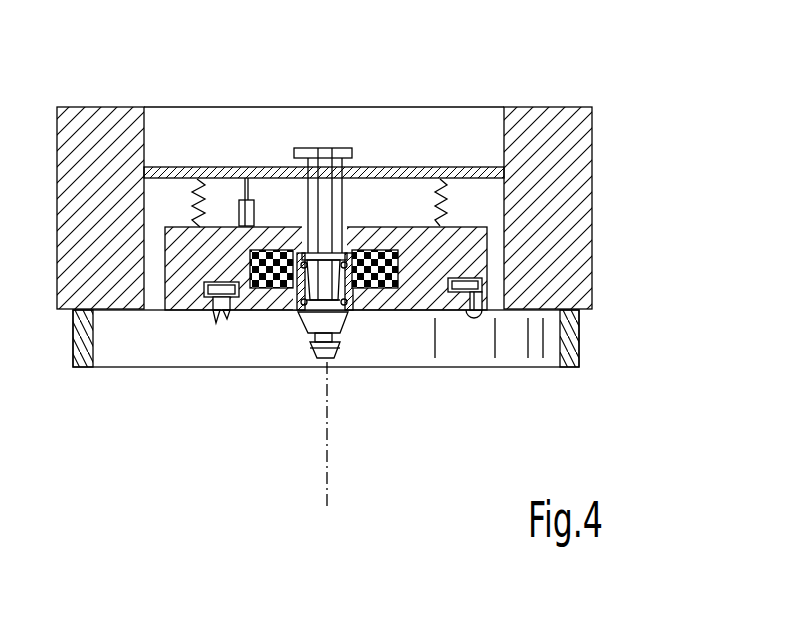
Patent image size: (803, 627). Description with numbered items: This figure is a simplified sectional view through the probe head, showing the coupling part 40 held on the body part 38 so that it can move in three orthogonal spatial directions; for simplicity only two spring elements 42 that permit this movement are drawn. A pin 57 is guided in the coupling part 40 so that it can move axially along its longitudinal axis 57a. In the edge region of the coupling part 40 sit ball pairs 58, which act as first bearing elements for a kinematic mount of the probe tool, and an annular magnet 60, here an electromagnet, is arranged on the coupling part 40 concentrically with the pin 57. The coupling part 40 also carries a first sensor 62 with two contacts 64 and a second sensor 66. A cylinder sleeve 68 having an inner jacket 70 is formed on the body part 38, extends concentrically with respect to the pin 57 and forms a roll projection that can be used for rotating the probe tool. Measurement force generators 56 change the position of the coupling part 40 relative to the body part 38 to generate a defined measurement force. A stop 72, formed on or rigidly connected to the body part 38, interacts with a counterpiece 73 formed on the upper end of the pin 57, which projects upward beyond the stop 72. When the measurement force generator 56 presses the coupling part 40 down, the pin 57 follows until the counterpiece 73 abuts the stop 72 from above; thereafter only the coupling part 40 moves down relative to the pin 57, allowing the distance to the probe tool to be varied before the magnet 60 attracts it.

The body part 38 is at (570, 163).
The coupling part 40 is at (190, 300).
The spring elements 42 is at (192, 200).
The measurement force generator 56 is at (254, 208).
The pin 57 is at (340, 352).
The nozzle axis 57a is at (328, 472).
The ball pairs 58 is at (475, 318).
The magnet 60 is at (287, 312).
The first sensor 62 is at (225, 282).
The contacts 64 is at (228, 313).
The second sensor 66 is at (455, 292).
The cylinder sleeve 68 is at (575, 348).
The inner jacket 70 is at (94, 348).
The stop 72 is at (370, 166).
The counterpiece 73 is at (308, 150).